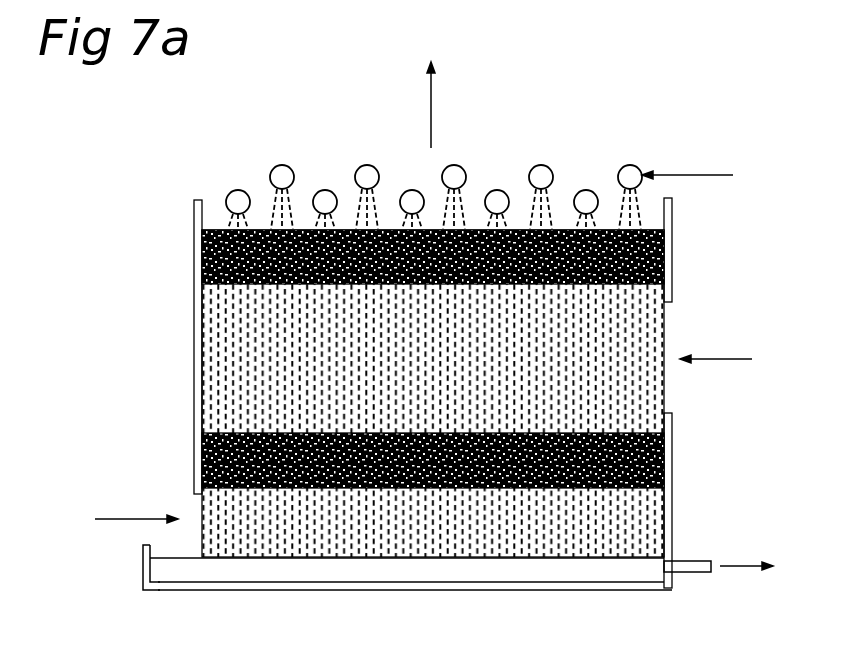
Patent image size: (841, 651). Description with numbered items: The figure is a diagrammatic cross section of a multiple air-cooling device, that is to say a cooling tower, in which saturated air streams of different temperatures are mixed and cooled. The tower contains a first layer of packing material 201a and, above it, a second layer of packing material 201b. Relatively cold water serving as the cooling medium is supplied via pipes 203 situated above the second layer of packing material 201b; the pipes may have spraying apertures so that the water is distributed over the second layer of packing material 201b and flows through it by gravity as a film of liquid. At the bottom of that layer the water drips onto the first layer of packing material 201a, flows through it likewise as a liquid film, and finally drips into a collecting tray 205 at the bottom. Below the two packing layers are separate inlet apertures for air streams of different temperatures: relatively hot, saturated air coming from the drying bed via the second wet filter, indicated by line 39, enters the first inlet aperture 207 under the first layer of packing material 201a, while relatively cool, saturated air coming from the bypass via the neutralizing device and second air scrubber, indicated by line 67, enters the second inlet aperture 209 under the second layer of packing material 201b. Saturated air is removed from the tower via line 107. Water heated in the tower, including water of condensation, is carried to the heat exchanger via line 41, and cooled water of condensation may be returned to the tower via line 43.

The pipes 203 is at (325, 192).
The line 107 is at (431, 103).
The line 43 is at (707, 175).
The second layer of packing material 201b is at (204, 259).
The first layer of packing material 201a is at (204, 462).
The second inlet aperture 209 is at (665, 324).
The line 67 is at (745, 359).
The line 39 is at (113, 519).
The line 41 is at (737, 566).
The first inlet aperture 207 is at (202, 544).
The collecting tray 205 is at (582, 568).